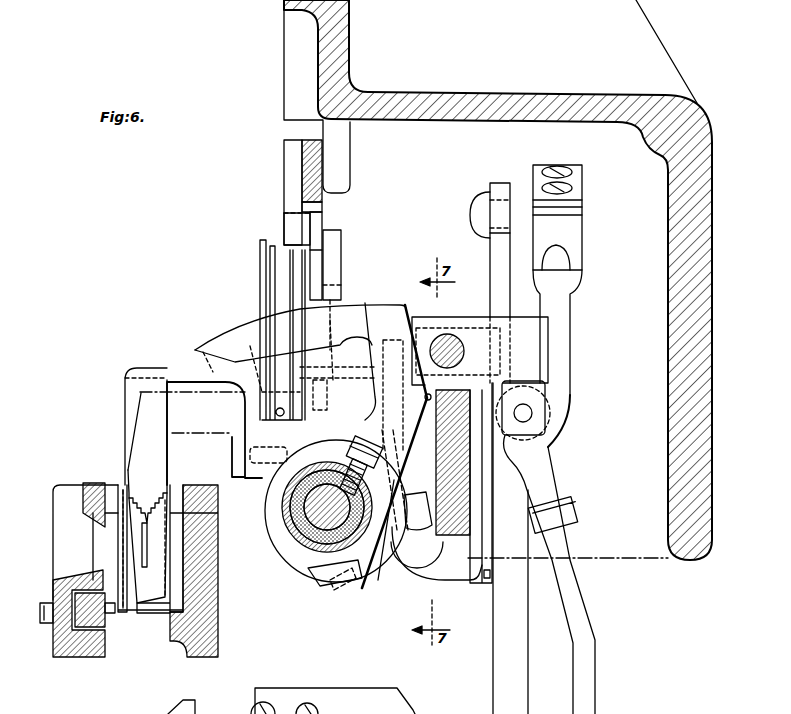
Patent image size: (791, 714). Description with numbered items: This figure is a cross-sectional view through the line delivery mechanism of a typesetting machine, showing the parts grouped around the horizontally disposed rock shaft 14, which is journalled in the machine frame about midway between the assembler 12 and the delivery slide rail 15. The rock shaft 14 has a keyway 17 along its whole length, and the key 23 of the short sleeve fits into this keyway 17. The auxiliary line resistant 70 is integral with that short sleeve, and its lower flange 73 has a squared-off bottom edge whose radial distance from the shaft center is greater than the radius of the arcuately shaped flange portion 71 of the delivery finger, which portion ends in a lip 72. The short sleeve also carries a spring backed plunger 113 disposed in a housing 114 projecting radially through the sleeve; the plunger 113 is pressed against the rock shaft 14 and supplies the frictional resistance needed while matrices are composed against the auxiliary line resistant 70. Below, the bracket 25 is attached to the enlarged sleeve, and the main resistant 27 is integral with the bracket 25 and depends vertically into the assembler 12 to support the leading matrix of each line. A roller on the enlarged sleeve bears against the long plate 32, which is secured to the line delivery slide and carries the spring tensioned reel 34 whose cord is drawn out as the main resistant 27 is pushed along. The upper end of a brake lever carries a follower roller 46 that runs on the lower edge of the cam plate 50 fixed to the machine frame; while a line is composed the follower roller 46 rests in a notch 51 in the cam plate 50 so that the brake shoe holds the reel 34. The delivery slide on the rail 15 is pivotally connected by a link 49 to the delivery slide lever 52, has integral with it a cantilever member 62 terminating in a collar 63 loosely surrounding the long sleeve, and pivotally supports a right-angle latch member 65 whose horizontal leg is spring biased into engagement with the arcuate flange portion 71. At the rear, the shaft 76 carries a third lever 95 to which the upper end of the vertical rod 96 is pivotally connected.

The assembler 12 is at (66, 540).
The rock shaft 14 is at (347, 483).
The delivery slide rail 15 is at (456, 498).
The keyway 17 is at (312, 500).
The key 23 is at (305, 495).
The bracket 25 is at (240, 412).
The main resistant 27 is at (140, 450).
The long plate 32 is at (335, 243).
The spring tensioned reel 34 is at (270, 248).
The follower roller 46 is at (290, 220).
The link 49 is at (499, 190).
The cam plate 50 is at (300, 165).
The notch 51 is at (316, 208).
The delivery slide lever 52 is at (506, 672).
The cantilever member 62 is at (412, 584).
The collar 63 is at (282, 541).
The right-angle latch member 65 is at (417, 530).
The auxiliary line resistant 70 is at (237, 332).
The arcuately shaped flange portion 71 is at (384, 585).
The lip 72 is at (355, 585).
The lower flange 73 is at (324, 585).
The shaft 76 is at (450, 334).
The third lever 95 is at (530, 328).
The vertical rod 96 is at (582, 626).
The spring backed plunger 113 is at (340, 470).
The housing 114 is at (330, 445).